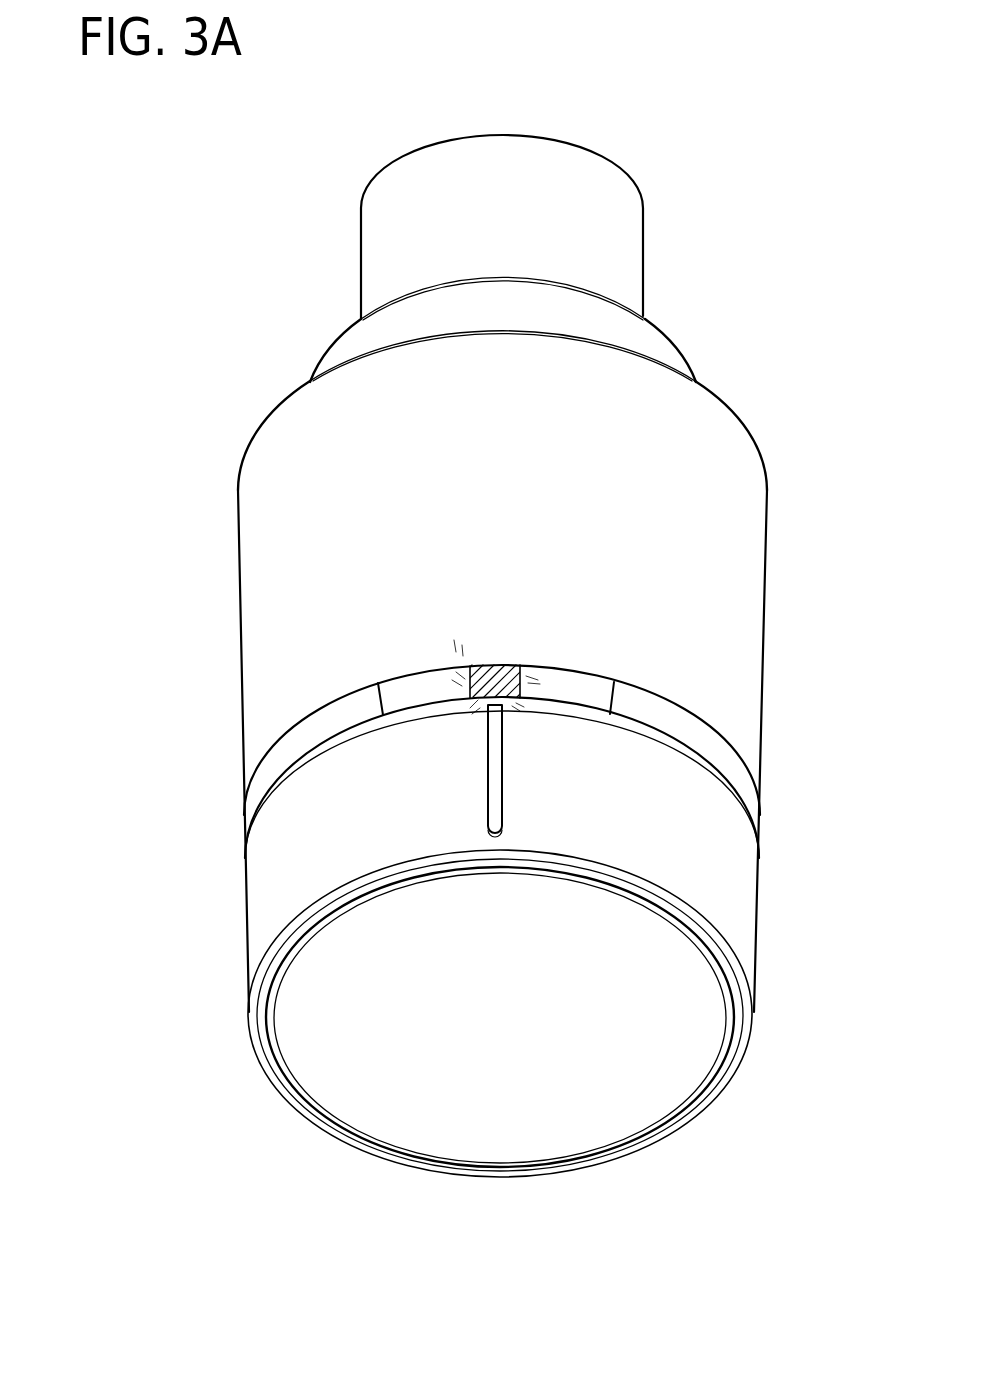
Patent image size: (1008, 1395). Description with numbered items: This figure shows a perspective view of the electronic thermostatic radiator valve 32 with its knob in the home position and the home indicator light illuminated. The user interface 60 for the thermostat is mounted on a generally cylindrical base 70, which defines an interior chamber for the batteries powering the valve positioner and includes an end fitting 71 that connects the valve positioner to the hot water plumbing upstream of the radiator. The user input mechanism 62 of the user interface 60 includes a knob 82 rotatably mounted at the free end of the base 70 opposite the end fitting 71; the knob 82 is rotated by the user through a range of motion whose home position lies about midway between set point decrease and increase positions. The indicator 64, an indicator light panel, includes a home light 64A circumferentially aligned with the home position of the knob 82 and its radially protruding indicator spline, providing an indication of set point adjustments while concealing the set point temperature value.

The electronic lock thumbturn assembly 32 is at (110, 1144).
The user interface 60 is at (710, 1187).
The user input mechanism 62 is at (757, 948).
The indicator light panel 64 is at (624, 697).
The home light 64A is at (513, 672).
The base 70 is at (766, 593).
The end fitting 71 is at (607, 247).
The knob 82 is at (280, 879).